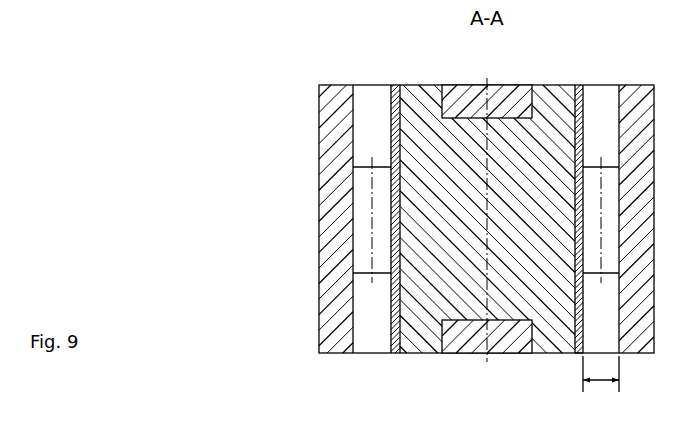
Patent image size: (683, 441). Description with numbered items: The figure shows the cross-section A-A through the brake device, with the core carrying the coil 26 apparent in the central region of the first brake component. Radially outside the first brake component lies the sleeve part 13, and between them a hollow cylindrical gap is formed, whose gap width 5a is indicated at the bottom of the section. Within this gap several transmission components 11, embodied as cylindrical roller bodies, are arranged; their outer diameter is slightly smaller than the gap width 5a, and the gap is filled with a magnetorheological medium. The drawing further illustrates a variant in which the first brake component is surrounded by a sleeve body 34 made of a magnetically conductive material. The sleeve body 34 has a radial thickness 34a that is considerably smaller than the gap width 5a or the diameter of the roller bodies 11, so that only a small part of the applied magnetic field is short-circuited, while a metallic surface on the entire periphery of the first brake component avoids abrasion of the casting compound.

The sleeve part 13 is at (332, 148).
The transmission components 11 is at (358, 207).
The coil 26 is at (460, 88).
The sleeve body 34 is at (578, 96).
The radial thickness 34a is at (578, 358).
The gap width 5a is at (602, 382).